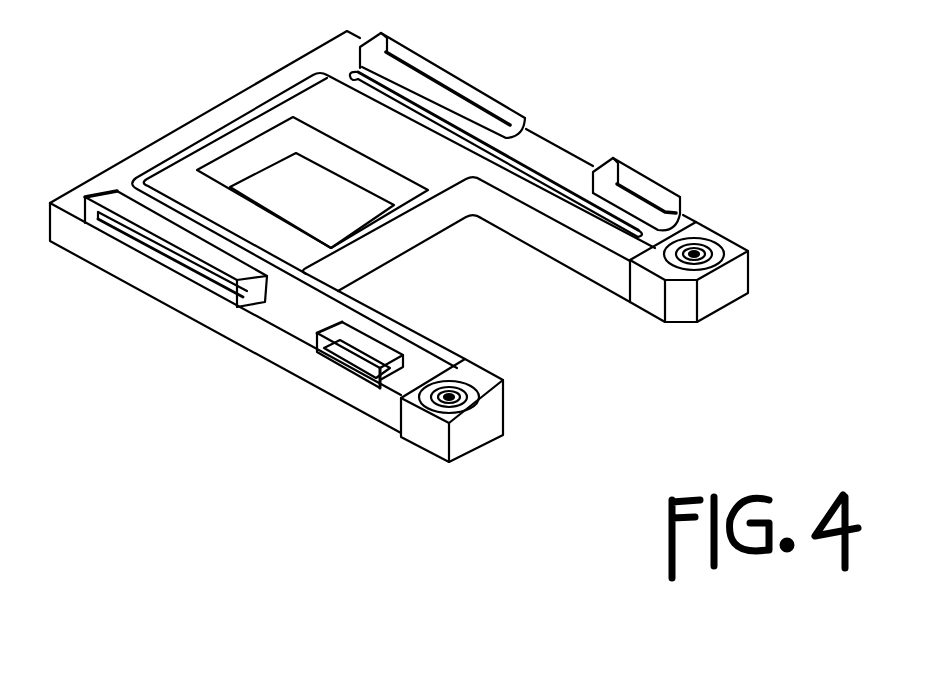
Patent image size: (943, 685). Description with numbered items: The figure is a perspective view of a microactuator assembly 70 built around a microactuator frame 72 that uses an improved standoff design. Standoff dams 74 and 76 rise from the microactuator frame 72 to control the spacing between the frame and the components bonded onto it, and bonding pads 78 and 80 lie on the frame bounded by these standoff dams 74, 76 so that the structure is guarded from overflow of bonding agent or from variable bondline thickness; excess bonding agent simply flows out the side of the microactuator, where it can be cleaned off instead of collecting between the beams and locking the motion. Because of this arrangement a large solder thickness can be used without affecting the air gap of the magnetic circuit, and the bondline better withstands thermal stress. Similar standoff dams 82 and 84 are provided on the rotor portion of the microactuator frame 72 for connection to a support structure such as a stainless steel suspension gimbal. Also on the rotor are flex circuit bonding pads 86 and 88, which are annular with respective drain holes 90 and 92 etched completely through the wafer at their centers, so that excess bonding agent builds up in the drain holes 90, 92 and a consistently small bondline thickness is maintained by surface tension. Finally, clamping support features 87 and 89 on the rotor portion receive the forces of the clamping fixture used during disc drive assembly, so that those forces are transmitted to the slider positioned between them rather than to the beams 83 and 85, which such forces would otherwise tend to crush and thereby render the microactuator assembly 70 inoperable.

The microactuator assembly 70 is at (427, 269).
The microactuator frame 72 is at (117, 162).
The standoff dam 74 is at (250, 293).
The standoff dam 76 is at (538, 120).
The bonding pad 78 is at (192, 277).
The bonding pad 80 is at (437, 87).
The standoff dam 82 is at (378, 382).
The beam 83 is at (305, 296).
The standoff dam 84 is at (683, 204).
The beam 85 is at (535, 177).
The flex circuit bonding pad 86 is at (447, 402).
The clamping support feature 87 is at (490, 388).
The flex circuit bonding pad 88 is at (716, 256).
The clamping support feature 89 is at (686, 275).
The drain hole 90 is at (455, 400).
The drain hole 92 is at (700, 258).